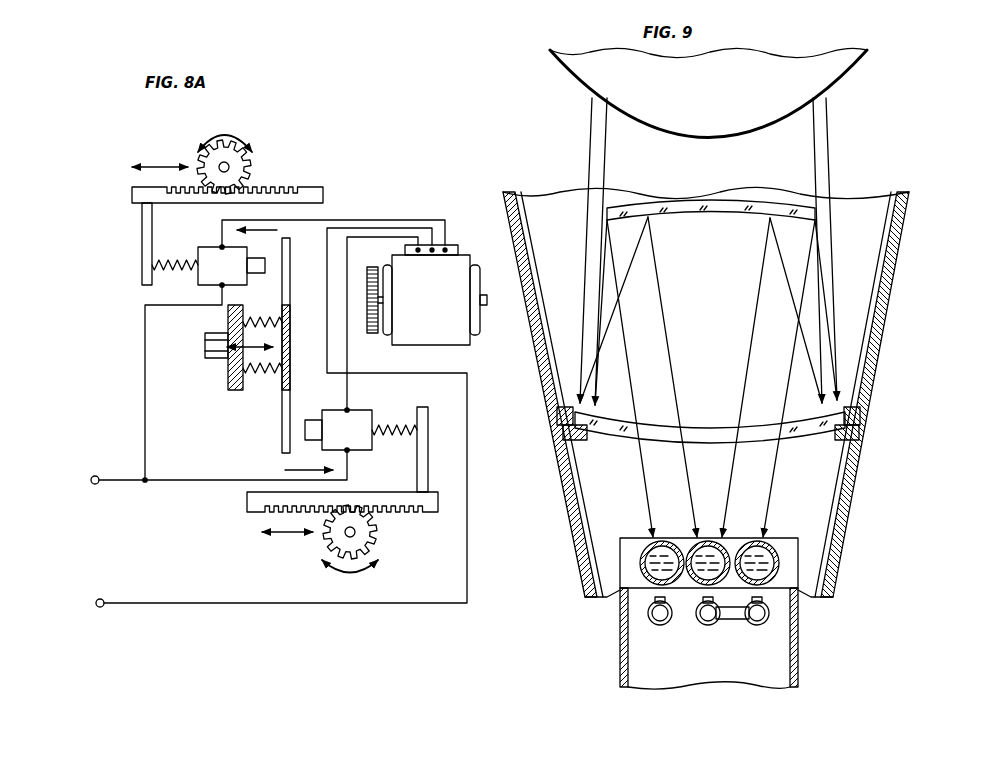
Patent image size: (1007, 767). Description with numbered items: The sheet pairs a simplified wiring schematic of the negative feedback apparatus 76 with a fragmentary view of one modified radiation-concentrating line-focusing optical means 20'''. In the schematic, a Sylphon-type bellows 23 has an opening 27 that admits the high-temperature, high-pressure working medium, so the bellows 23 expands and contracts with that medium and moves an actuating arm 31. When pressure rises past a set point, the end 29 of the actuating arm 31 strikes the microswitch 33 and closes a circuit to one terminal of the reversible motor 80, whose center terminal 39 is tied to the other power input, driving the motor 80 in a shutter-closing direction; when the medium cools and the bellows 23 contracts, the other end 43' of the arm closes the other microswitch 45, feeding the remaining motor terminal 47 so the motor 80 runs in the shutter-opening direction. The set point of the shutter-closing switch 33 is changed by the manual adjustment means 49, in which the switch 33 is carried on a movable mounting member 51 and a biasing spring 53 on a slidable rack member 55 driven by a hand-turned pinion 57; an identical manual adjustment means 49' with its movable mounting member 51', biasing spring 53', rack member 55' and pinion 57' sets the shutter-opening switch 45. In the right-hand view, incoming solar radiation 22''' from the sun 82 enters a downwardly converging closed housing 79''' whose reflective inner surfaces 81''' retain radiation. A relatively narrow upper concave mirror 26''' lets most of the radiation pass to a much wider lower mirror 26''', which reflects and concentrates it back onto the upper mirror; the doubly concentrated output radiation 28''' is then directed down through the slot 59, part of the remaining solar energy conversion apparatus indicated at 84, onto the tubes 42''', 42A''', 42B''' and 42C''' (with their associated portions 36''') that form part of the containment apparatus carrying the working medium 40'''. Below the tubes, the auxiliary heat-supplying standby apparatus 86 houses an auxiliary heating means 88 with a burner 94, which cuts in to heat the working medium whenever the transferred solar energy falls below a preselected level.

In FIG. 8A, the manual adjustment means 49' is at (145, 134).
In FIG. 8A, the pinion 57' is at (255, 164).
In FIG. 8A, the rack member 55' is at (261, 174).
In FIG. 8A, the movable mounting member 51' is at (118, 244).
In FIG. 8A, the negative feedback apparatus 76 is at (138, 243).
In FIG. 8A, the microswitch 45 is at (205, 245).
In FIG. 8A, the biasing spring 53' is at (144, 297).
In FIG. 8A, the other end of actuating arm 43' is at (341, 203).
In FIG. 8A, the actuating arm 31 is at (293, 346).
In FIG. 8A, the opening 27 is at (205, 345).
In FIG. 8A, the bellows 23 is at (262, 372).
In FIG. 8A, the end of actuating arm 29 is at (282, 455).
In FIG. 8A, the reversible motor 80 is at (427, 295).
In FIG. 8A, the microswitch 33 is at (351, 409).
In FIG. 8A, the biasing spring 53 is at (390, 455).
In FIG. 8A, the movable mounting member 51 is at (461, 445).
In FIG. 8A, the rack member 55 is at (308, 526).
In FIG. 8A, the pinion 57 is at (319, 541).
In FIG. 8A, the manual adjustment means 49 is at (413, 558).
In FIG. 9, the motor terminal 47 is at (834, 3).
In FIG. 9, the center terminal 39 is at (914, 3).
In FIG. 9, the sun 82 is at (708, 92).
In FIG. 9, the closed housing 79''' is at (701, 394).
In FIG. 9, the reflective inner surfaces 81''' is at (719, 316).
In FIG. 9, the input radiation 22''' is at (710, 251).
In FIG. 9, the concave mirror constructions 26''' is at (711, 233).
In FIG. 9, the radiation-concentrating line-focusing optical means 20''' is at (765, 343).
In FIG. 9, the slot 59 is at (700, 431).
In FIG. 9, the solar energy conversion apparatus 84 is at (862, 409).
In FIG. 9, the output radiation 28''' is at (804, 459).
In FIG. 9, the auxiliary heat-supplying standby apparatus 86 is at (803, 577).
In FIG. 9, the tubes 42''' is at (598, 573).
In FIG. 9, the heat absorbing tube 42A''' is at (815, 559).
In FIG. 9, the absorber tube 36''' is at (715, 527).
In FIG. 9, the working medium 40''' is at (769, 546).
In FIG. 9, the fluid pipe 42C''' is at (598, 631).
In FIG. 9, the fluid pipe 42B''' is at (724, 631).
In FIG. 9, the burner 94 is at (653, 626).
In FIG. 9, the auxiliary heating apparatus 88 is at (733, 630).